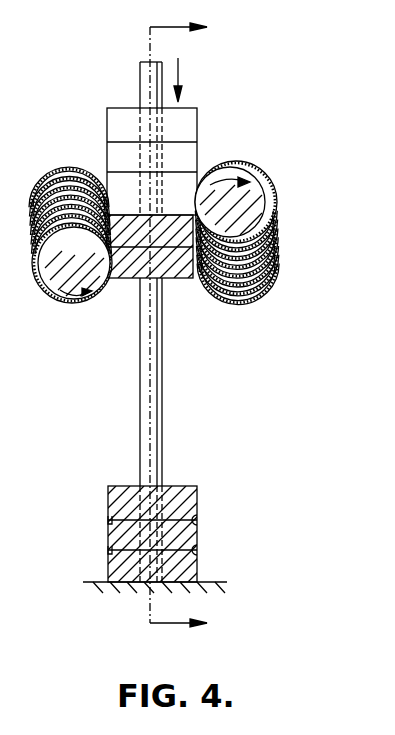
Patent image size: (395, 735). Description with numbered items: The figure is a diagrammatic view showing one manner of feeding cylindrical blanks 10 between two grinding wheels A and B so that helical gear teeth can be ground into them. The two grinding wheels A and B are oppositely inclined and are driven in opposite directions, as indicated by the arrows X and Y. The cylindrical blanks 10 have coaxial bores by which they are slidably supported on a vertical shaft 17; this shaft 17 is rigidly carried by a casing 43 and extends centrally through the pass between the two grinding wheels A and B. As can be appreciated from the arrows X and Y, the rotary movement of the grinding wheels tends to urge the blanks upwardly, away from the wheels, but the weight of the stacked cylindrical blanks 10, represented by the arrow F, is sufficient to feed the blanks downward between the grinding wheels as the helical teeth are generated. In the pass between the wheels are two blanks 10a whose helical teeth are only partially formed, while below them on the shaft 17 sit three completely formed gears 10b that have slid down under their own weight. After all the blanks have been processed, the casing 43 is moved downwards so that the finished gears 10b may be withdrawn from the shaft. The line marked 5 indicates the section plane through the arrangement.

The section line 5- 5 is at (184, 326).
The cylindrical blanks 10 is at (172, 183).
The blanks with partially formed helical teeth 10a is at (181, 256).
The completely formed gears 10b is at (179, 545).
The vertical shaft 17 is at (160, 388).
The casing 43 is at (114, 582).
The grinding wheel A is at (70, 246).
The grinding wheel B is at (238, 224).
The arrow X is at (79, 292).
The arrow Y is at (228, 178).
The arrow F is at (183, 80).